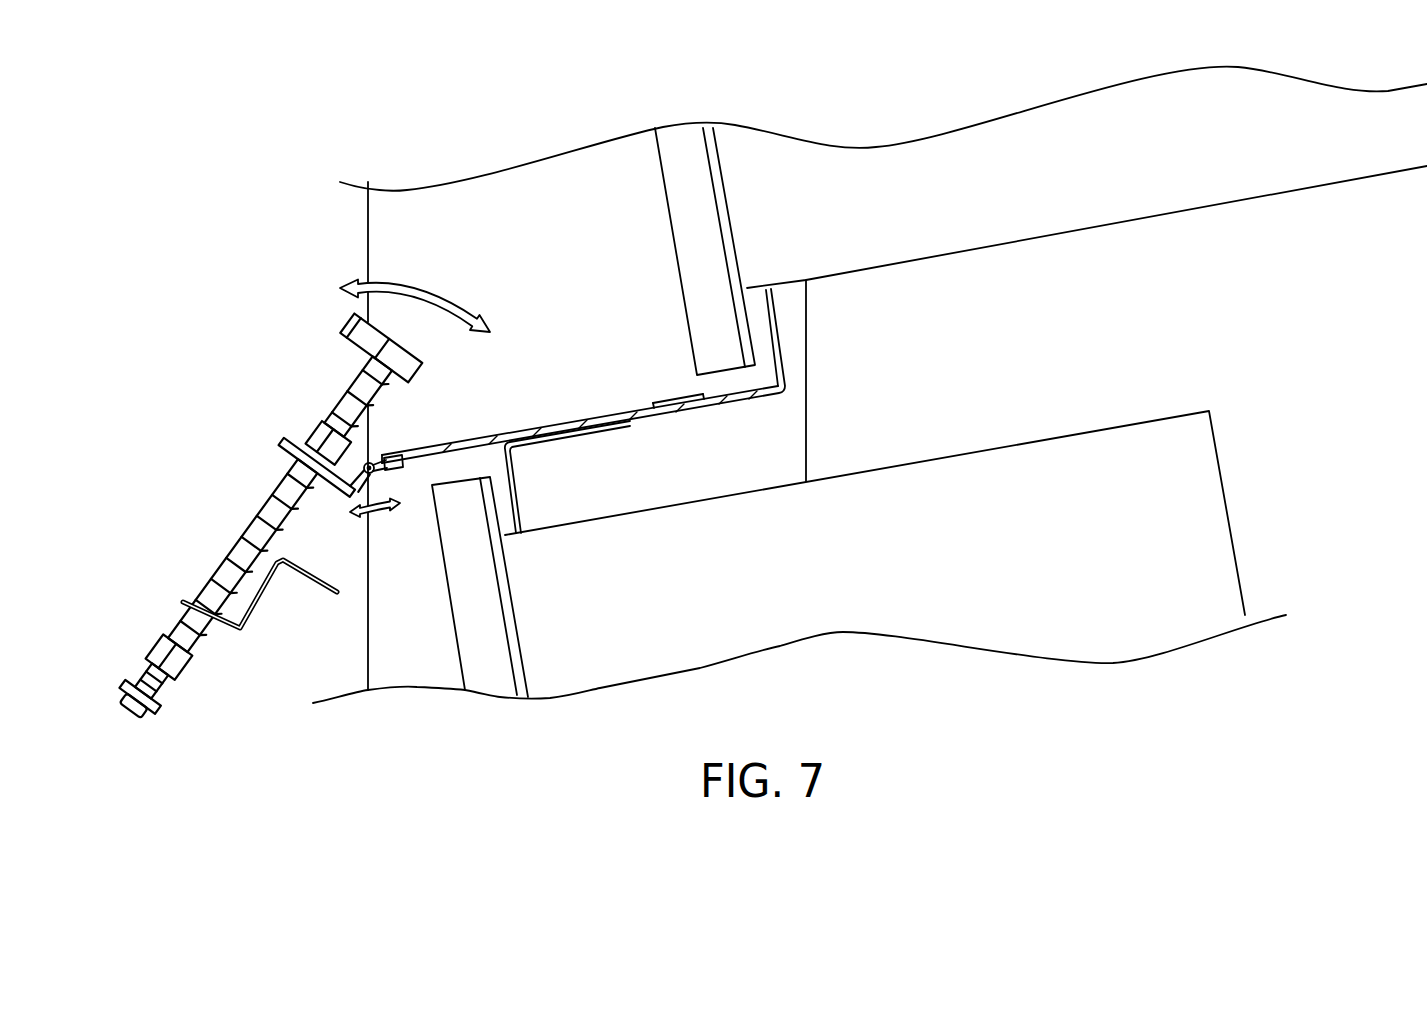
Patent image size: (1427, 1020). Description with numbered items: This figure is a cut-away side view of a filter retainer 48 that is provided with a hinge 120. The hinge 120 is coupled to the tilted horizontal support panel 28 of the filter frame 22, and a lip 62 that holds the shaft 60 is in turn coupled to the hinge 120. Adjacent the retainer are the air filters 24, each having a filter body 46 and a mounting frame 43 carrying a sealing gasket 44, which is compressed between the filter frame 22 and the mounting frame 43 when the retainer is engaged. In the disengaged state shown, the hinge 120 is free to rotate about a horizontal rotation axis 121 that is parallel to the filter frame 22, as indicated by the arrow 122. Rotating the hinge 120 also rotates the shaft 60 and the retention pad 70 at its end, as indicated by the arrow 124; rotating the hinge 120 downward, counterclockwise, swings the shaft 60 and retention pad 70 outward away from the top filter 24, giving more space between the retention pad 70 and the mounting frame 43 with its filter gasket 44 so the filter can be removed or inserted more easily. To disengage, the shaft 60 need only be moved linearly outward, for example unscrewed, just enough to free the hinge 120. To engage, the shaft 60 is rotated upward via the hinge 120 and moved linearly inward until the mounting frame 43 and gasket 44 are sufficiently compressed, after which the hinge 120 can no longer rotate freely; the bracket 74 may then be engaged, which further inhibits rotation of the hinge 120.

The filter frame 22 is at (807, 414).
The air filter 24 is at (607, 162).
The horizontal support panel 28 is at (649, 419).
The mounting frame 43 is at (714, 263).
The sealing gasket 44 is at (719, 187).
The filter body 46 is at (814, 226).
The filter retainer 48 is at (247, 548).
The shaft 60 is at (347, 398).
The lip 62 is at (296, 437).
The retention pad 70 is at (352, 347).
The bracket 74 is at (261, 598).
The hinge 120 is at (387, 472).
The horizontal rotation axis 121 is at (370, 462).
The arrow 122 is at (384, 520).
The arrow 124 is at (427, 292).